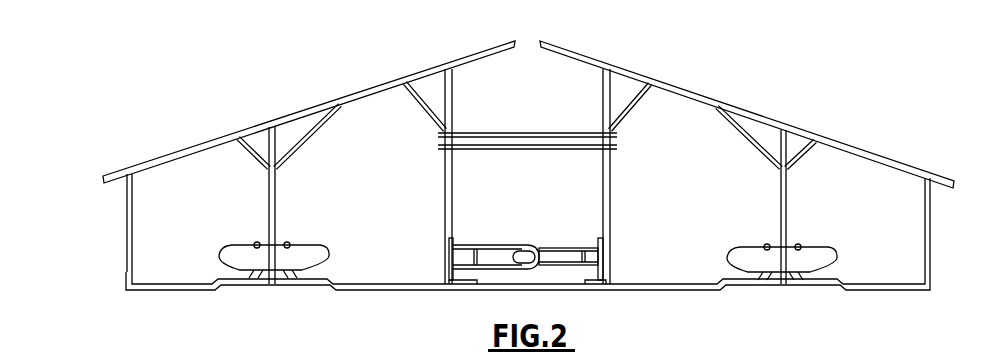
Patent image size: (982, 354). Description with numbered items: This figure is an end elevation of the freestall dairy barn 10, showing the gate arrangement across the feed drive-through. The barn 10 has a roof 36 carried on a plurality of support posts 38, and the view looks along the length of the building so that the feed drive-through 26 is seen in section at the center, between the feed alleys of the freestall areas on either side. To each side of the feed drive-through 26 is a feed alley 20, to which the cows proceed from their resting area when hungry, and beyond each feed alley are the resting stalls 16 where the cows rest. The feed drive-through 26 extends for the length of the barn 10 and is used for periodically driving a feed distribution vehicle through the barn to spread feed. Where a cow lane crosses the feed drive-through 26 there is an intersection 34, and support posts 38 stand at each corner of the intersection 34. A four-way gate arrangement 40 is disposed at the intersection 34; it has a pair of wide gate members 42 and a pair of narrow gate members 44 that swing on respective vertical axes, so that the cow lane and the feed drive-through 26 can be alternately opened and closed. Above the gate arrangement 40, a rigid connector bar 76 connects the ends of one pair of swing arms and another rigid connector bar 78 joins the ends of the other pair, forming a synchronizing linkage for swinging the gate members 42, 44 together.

The freestall dairy barn 10 is at (528, 181).
The resting stalls 16 is at (302, 245).
The feed alley 20 is at (422, 277).
The feed drive-through 26 is at (552, 284).
The intersection 34 is at (545, 200).
The roof 36 is at (368, 83).
The support posts 38 is at (447, 167).
The four-way gate arrangement 40 is at (522, 264).
The wide gate members 42 is at (500, 245).
The narrow gate members 44 is at (553, 245).
The connector bar 76 is at (502, 133).
The connector bar 78 is at (540, 133).